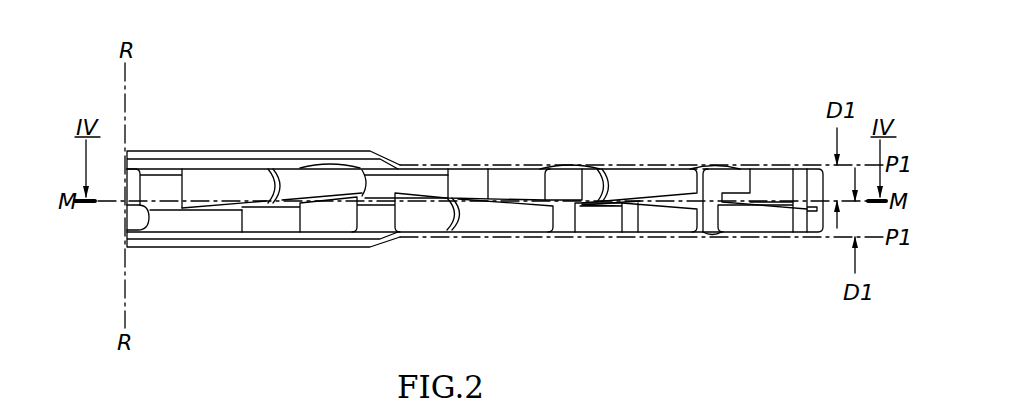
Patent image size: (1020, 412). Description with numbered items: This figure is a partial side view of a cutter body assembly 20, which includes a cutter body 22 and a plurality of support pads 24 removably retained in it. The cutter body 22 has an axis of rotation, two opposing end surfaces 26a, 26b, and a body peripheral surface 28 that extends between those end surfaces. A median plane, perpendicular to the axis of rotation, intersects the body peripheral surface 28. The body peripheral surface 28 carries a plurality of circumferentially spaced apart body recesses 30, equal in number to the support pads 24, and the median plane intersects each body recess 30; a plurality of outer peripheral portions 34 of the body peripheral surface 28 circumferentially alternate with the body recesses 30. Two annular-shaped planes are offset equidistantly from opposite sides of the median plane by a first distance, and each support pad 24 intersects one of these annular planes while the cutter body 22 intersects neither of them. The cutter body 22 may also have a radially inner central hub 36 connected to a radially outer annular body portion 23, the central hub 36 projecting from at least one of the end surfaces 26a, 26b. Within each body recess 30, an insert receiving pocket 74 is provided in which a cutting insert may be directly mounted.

The cutter body assembly 20 is at (513, 117).
The cutter body 22 is at (399, 165).
The radially outer annular body portion 23 is at (540, 164).
The support pad 24 is at (753, 165).
The first end surface 26a is at (680, 165).
The second end surface 26b is at (677, 237).
The body peripheral surface 28 is at (163, 213).
The body recess 30 is at (510, 208).
The outer peripheral portion 34 is at (576, 210).
The central hub 36 is at (313, 150).
The insert receiving pocket 74 is at (418, 217).